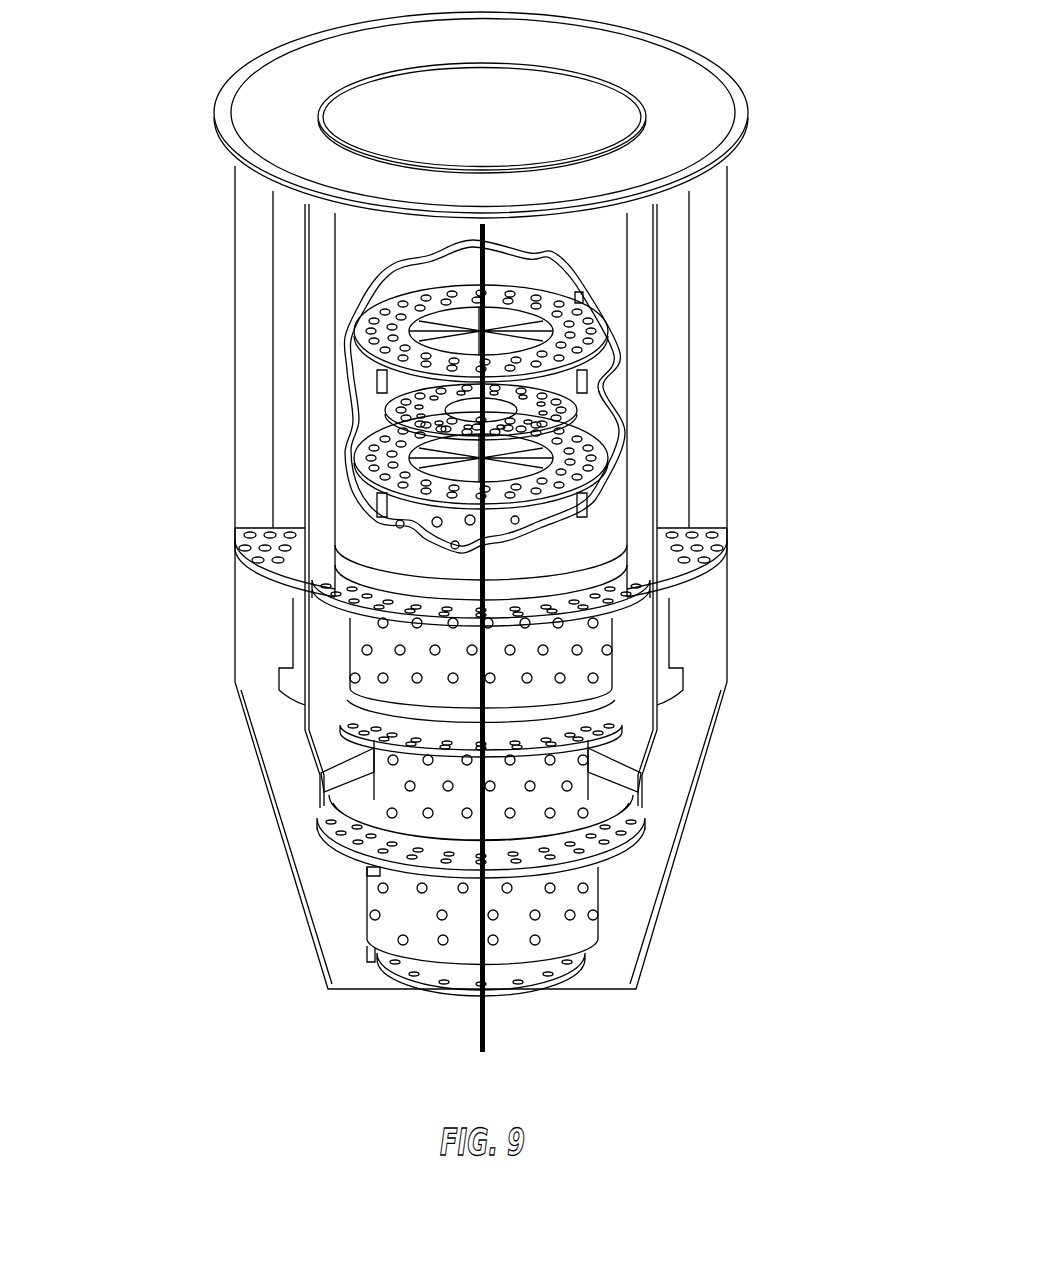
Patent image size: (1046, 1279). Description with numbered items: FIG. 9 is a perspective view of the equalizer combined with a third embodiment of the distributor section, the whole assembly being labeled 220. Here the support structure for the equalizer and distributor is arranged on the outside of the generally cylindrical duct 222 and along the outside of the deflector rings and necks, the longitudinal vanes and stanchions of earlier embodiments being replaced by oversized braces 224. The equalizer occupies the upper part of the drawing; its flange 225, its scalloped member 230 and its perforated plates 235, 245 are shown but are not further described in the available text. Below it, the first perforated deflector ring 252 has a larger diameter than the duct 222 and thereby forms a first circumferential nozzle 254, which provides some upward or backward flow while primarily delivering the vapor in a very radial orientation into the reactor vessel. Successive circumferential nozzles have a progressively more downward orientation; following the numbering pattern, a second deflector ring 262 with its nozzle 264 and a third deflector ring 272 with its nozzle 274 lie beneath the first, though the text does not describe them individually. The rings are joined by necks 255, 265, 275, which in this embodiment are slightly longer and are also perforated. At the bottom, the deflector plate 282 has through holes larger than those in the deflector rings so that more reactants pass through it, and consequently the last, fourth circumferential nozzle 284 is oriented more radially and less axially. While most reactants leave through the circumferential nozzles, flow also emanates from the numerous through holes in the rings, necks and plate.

The filter assembly 220 is at (158, 207).
The inner wall 222 is at (288, 310).
The oversized braces 224 is at (250, 478).
The top ring flange 225 is at (680, 76).
The scalloped basket 230 is at (396, 300).
The perforated plate 235 is at (375, 395).
The perforated plate 245 is at (360, 455).
The first perforated deflector ring 252 is at (680, 570).
The first circumferential nozzle 254 is at (258, 538).
The neck 255 is at (400, 657).
The perforated flange plate 262 is at (590, 725).
The support bracket 264 is at (407, 717).
The neck 265 is at (363, 800).
The perforated flange plate 272 is at (608, 843).
The support collar 274 is at (367, 870).
The neck 275 is at (423, 945).
The deflector plate 282 is at (522, 982).
The fourth circumferential nozzle 284 is at (375, 958).